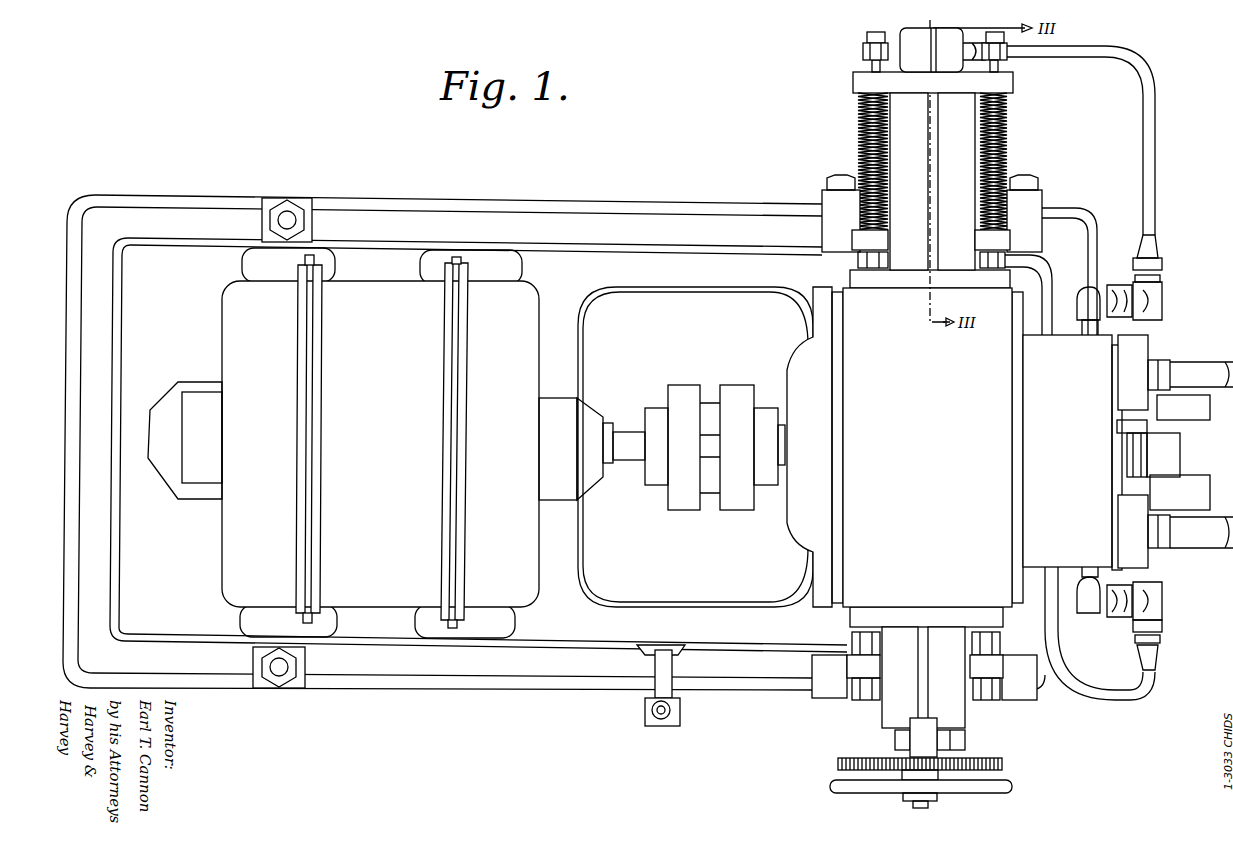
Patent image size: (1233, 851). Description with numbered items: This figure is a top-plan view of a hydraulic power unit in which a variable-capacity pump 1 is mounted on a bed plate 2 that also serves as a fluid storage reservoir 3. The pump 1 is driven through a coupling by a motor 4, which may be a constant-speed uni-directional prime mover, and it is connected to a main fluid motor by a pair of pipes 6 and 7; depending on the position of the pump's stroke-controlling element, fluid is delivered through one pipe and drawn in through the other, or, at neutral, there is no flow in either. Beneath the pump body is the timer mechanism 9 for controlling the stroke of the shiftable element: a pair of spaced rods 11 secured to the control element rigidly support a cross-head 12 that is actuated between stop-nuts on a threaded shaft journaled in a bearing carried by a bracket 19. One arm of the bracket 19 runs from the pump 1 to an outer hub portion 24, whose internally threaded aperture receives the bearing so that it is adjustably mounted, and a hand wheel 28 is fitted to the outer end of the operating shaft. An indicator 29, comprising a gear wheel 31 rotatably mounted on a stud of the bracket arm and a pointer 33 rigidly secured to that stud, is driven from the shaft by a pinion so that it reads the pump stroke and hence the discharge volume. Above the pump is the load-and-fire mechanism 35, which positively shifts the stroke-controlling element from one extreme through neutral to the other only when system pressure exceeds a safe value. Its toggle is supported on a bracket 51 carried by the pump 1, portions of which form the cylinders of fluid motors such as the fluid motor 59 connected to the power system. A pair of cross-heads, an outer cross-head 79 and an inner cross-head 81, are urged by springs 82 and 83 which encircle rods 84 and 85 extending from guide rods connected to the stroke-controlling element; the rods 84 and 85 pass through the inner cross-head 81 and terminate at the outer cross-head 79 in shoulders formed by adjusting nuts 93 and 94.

The variable-capacity pump 1 is at (927, 448).
The bed plate 2 is at (516, 224).
The fluid storage reservoir 3 is at (591, 204).
The motor 4 is at (380, 443).
The pipe 6 is at (1183, 540).
The pipe 7 is at (1181, 365).
The timer mechanism 9 is at (900, 677).
The spaced rods 11 is at (856, 645).
The cross-head 12 is at (852, 667).
The bracket 19 is at (946, 677).
The outer hub portion 24 is at (960, 739).
The hand wheel 28 is at (1013, 787).
The indicator 29 is at (932, 772).
The gear wheel 31 is at (1003, 765).
The pointer 33 is at (918, 775).
The mechanism 35 is at (955, 153).
The bracket 51 is at (909, 181).
The fluid motor 59 is at (918, 48).
The outer cross-head 79 is at (1013, 84).
The inner cross-head 81 is at (1005, 238).
The spring 82 is at (1007, 115).
The spring 83 is at (858, 117).
The rod 84 is at (1010, 70).
The rod 85 is at (860, 70).
The adjusting nut 93 is at (1010, 60).
The adjusting nut 94 is at (863, 52).